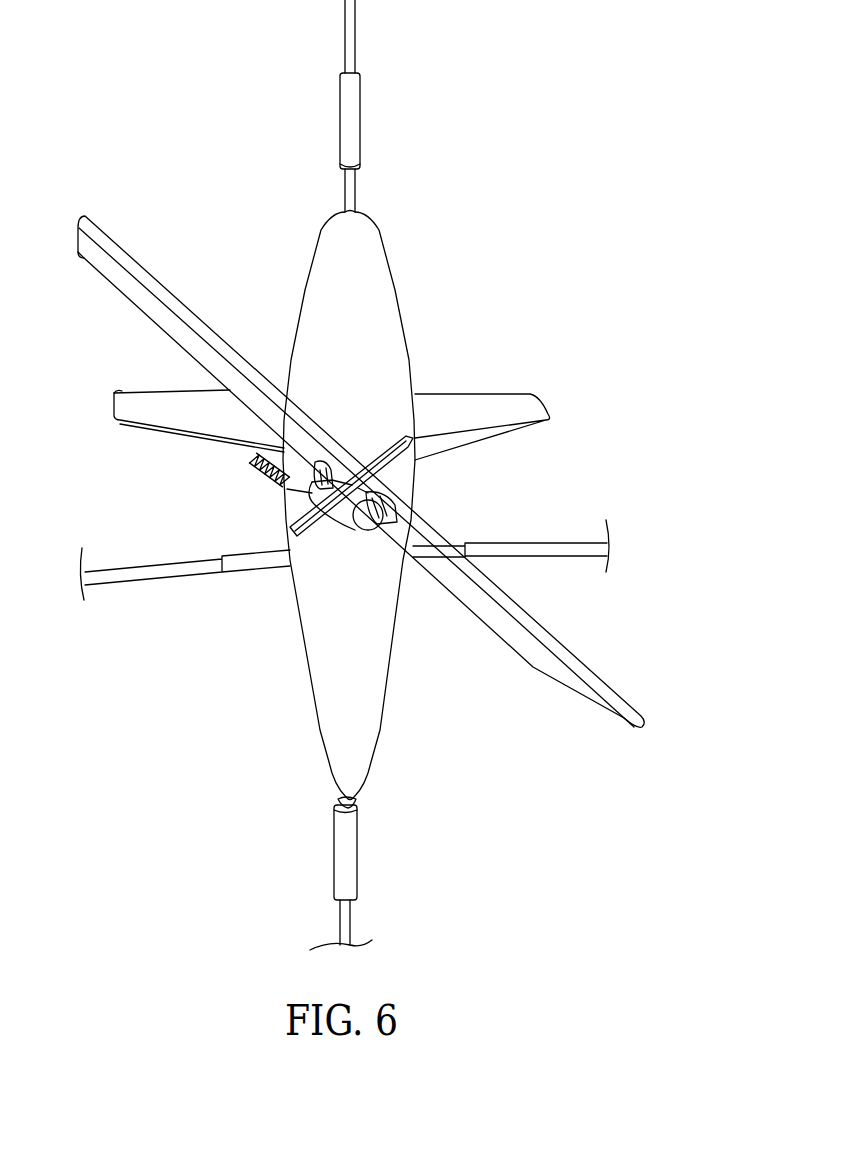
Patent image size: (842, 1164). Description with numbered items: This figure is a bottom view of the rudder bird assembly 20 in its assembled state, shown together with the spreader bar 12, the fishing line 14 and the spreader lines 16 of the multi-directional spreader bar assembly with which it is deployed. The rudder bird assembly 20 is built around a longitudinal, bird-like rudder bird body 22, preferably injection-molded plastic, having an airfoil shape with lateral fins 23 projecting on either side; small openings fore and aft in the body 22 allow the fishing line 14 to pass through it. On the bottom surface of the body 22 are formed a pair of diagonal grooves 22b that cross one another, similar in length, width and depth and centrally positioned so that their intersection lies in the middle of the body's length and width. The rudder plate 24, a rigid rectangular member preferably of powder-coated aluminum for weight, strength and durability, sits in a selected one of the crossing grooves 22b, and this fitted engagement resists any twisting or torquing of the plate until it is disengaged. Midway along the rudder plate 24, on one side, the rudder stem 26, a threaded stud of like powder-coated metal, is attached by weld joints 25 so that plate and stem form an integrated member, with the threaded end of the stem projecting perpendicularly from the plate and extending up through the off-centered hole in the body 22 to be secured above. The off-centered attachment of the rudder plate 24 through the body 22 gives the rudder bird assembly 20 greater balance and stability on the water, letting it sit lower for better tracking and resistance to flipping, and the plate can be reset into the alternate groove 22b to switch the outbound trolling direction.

The spreader bar 12 is at (153, 577).
The fishing line 14 is at (356, 30).
The spreader lines 16 is at (352, 907).
The rudder bird assembly 20 is at (233, 263).
The rudder bird body 22 is at (398, 283).
The diagonal grooves 22b is at (290, 532).
The lateral fins 23 is at (123, 422).
The rudder plate 24 is at (108, 280).
The weld joints 25 is at (413, 523).
The rudder stem 26 is at (287, 474).